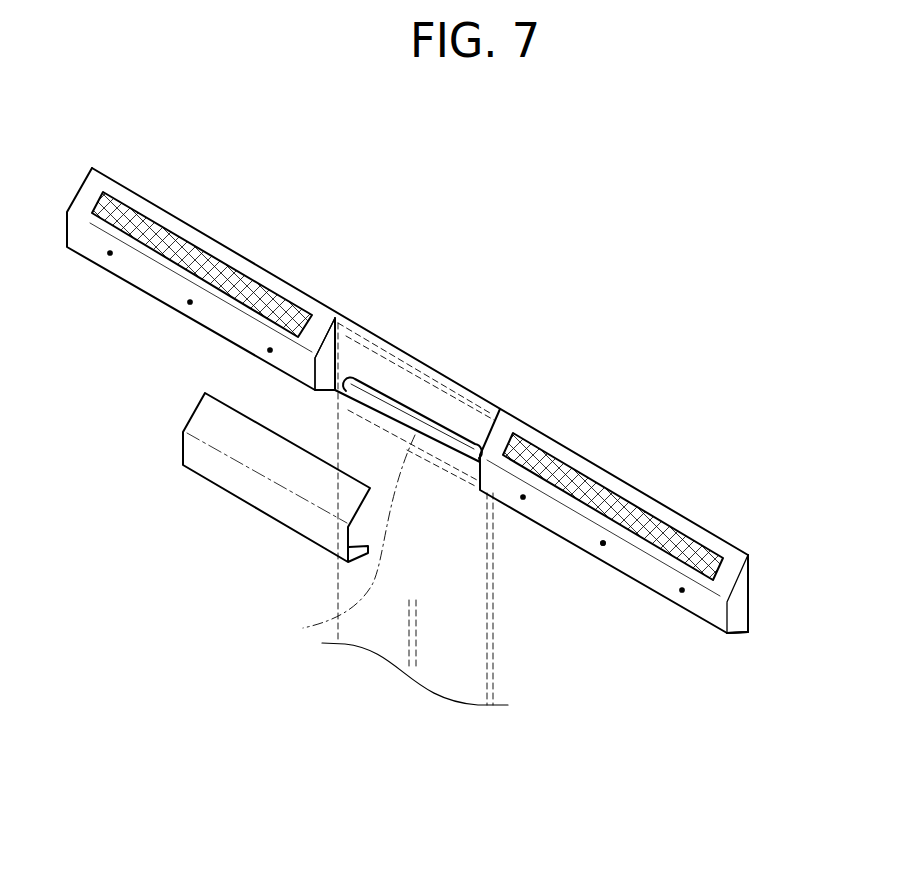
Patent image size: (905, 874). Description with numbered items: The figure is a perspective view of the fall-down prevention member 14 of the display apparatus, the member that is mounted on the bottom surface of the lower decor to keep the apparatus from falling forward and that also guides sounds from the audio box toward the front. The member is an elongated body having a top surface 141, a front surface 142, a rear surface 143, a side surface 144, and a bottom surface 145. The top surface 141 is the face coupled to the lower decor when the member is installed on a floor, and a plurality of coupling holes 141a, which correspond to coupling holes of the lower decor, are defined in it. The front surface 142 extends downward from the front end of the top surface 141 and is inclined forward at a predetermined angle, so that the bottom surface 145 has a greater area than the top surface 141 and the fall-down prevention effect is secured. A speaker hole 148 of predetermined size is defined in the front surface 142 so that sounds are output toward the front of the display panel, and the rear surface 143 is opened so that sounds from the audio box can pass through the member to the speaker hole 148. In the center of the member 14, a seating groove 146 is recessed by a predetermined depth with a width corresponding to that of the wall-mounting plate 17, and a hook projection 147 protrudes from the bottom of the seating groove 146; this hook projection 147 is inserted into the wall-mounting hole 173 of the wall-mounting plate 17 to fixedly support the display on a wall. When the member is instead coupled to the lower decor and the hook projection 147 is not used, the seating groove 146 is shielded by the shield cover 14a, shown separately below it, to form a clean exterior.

The fall-down prevention member 14 is at (487, 188).
The shield cover 14a is at (228, 481).
The wall-mounting plate 17 is at (492, 670).
The top surface 141 is at (658, 588).
The coupling holes 141a is at (598, 548).
The front surface 142 is at (735, 557).
The rear surface 143 is at (733, 636).
The side surface 144 is at (742, 610).
The bottom surface 145 is at (750, 578).
The seating groove 146 is at (322, 373).
The hook projection 147 is at (405, 410).
The speaker hole 148 is at (235, 283).
The wall-mounting hole 173 is at (337, 541).